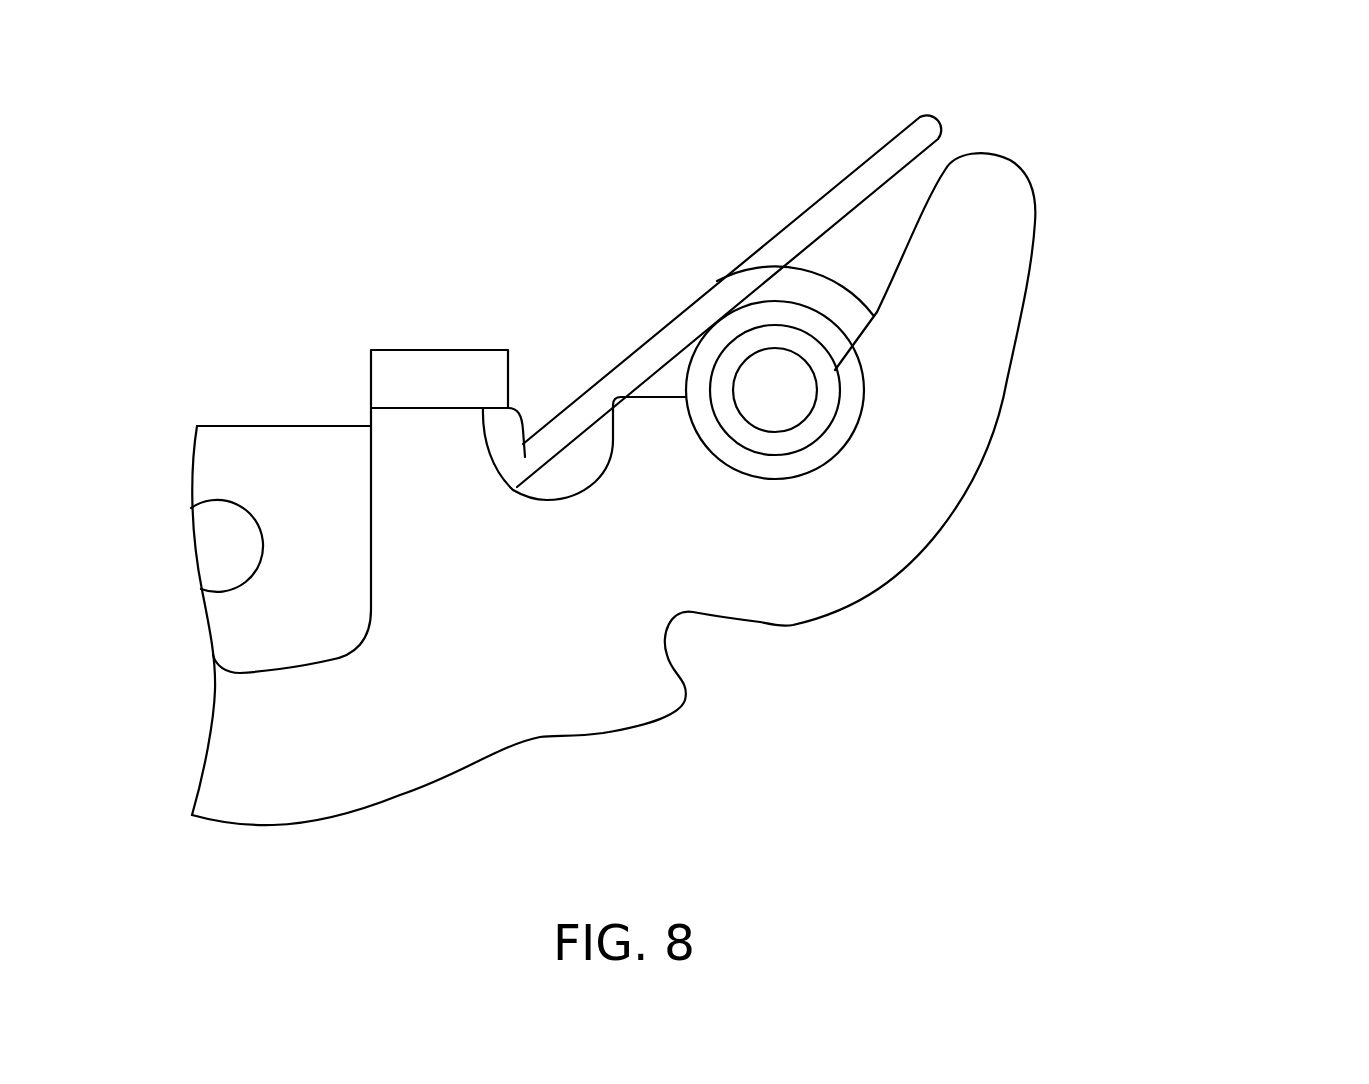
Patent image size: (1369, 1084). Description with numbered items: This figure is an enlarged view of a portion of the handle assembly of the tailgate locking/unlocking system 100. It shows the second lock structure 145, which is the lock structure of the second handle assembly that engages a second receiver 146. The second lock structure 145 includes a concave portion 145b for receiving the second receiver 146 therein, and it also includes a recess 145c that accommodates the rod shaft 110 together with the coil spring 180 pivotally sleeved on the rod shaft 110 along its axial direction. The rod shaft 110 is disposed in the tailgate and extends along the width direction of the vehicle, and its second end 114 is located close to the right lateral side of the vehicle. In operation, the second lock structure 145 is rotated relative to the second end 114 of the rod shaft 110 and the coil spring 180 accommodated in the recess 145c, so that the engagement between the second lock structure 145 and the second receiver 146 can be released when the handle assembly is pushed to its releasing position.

The tailgate locking/unlocking system 100 is at (1205, 105).
The rod shaft 110 is at (777, 380).
The second end 114 is at (773, 415).
The second lock structure 145 is at (950, 433).
The concave portion 145b is at (233, 652).
The recess 145c is at (705, 423).
The second receiver 146 is at (212, 550).
The coil spring 180 is at (813, 297).